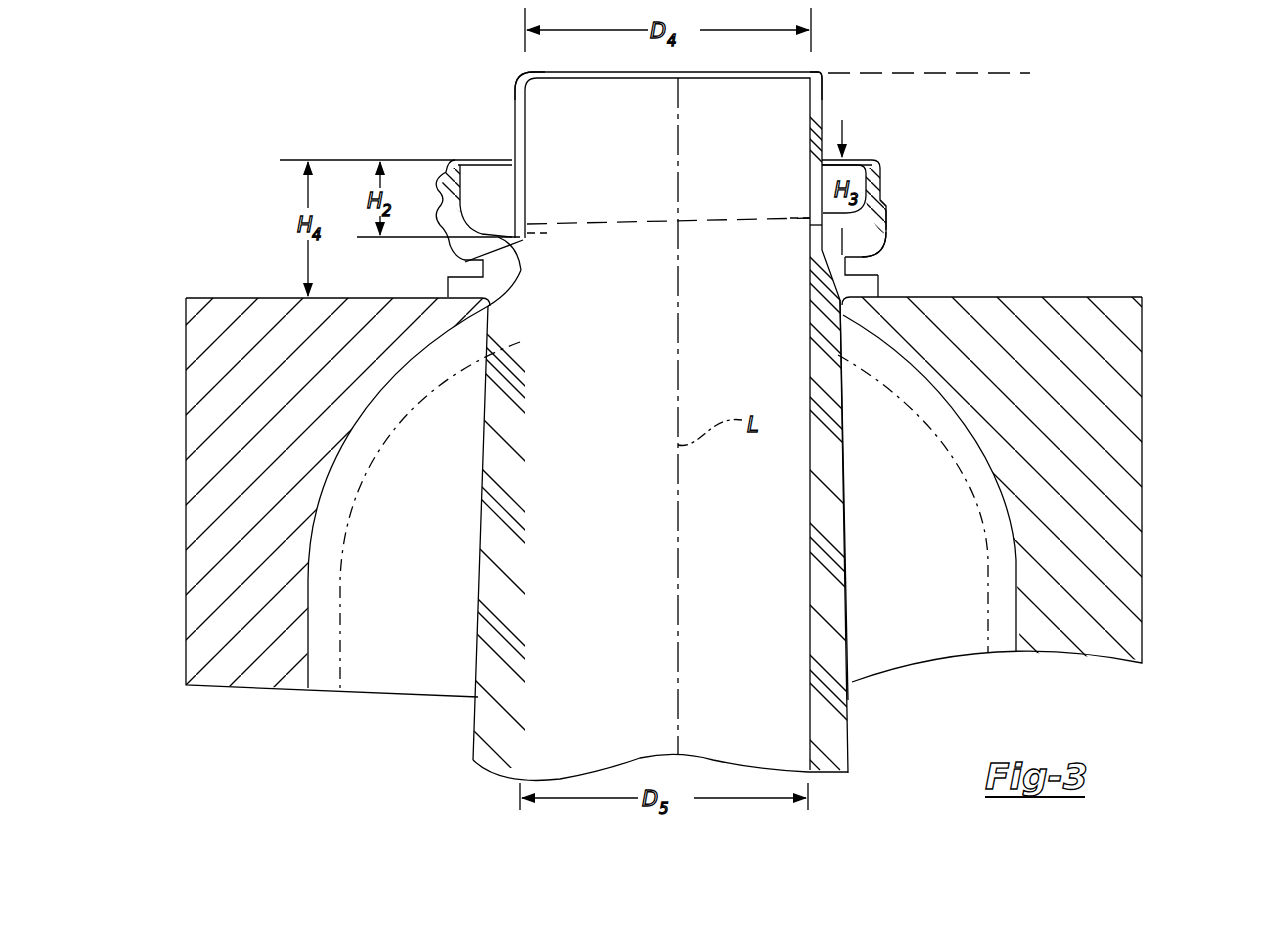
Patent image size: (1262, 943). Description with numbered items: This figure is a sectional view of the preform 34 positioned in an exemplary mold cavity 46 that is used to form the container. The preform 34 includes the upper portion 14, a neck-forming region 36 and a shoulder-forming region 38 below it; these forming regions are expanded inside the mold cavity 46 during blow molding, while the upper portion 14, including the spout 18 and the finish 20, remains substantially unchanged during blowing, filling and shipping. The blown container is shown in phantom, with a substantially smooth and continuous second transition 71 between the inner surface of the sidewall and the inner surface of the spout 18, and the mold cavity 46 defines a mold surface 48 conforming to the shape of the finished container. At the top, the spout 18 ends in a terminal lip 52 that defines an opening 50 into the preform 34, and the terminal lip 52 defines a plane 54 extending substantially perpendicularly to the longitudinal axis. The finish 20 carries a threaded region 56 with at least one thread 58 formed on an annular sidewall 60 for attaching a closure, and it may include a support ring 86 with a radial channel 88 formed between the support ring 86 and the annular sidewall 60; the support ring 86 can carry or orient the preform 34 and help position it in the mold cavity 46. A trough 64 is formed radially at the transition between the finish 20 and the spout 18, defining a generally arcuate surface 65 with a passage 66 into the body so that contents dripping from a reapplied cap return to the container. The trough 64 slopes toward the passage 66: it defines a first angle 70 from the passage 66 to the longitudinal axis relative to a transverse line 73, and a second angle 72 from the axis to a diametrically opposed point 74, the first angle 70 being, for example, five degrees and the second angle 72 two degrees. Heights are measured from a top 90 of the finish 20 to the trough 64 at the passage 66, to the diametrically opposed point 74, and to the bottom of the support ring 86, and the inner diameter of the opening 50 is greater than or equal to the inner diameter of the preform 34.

The upper portion 14 is at (889, 154).
The spout 18 is at (829, 85).
The finish 20 is at (890, 220).
The preform 34 is at (229, 133).
The neck-forming region 36 is at (849, 393).
The shoulder-forming region 38 is at (858, 600).
The mold cavity 46 is at (1142, 460).
The mold surface 48 is at (1019, 612).
The opening 50 is at (558, 87).
The terminal lip 52 is at (818, 74).
The plane 54 is at (942, 72).
The threaded region 56 is at (948, 199).
The thread 58 is at (889, 205).
The annular sidewall 60 is at (885, 238).
The trough 64 is at (856, 144).
The arcuate surface 65 is at (462, 232).
The passage 66 is at (470, 258).
The first angle 70 is at (573, 229).
The second transition 71 is at (540, 350).
The second angle 72 is at (787, 226).
The transverse line 73 is at (603, 198).
The diametrically opposed point 74 is at (842, 229).
The support ring 86 is at (878, 292).
The radial channel 88 is at (858, 268).
The top of the finish 90 is at (455, 158).